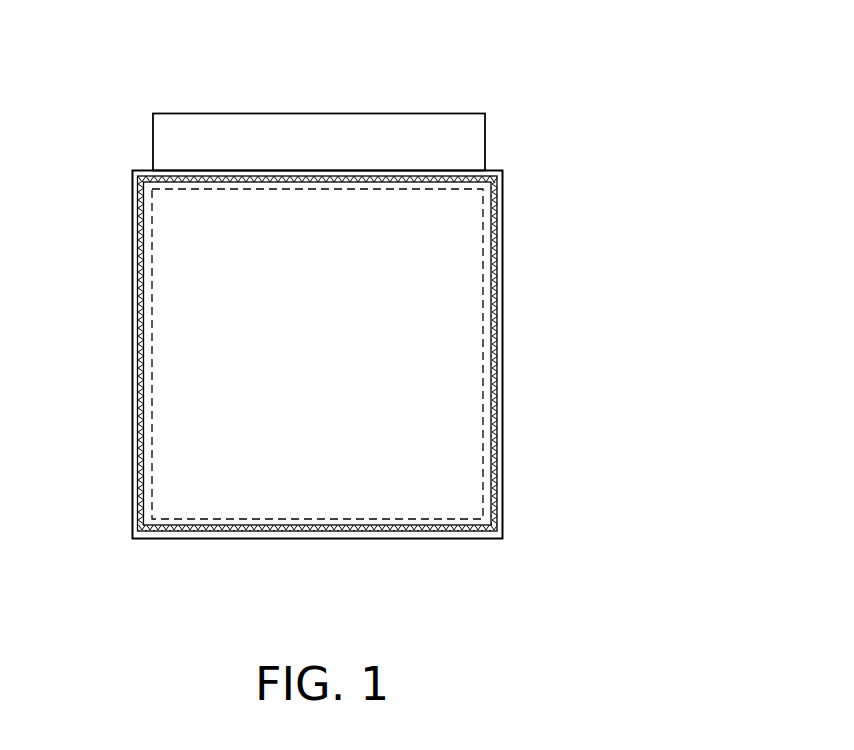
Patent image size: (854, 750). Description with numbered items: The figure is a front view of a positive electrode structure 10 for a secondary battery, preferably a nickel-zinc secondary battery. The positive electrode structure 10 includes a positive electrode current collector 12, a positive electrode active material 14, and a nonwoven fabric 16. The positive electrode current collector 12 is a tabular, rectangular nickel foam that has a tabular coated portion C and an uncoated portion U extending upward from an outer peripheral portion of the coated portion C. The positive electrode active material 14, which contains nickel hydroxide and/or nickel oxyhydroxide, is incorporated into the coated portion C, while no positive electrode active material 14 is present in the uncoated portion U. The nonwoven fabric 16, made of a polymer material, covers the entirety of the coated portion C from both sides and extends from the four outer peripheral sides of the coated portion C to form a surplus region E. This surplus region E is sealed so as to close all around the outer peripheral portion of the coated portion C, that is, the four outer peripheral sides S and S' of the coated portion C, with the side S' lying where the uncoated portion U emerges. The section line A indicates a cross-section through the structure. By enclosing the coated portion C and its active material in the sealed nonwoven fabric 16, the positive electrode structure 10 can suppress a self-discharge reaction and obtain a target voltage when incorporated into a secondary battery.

The positive electrode structure 10 is at (544, 84).
The positive electrode current collector 12 is at (468, 133).
The positive electrode active material 14 is at (460, 325).
The nonwoven fabric 16 is at (465, 452).
The surplus region E is at (178, 175).
The outer peripheral side S is at (314, 469).
The outer peripheral side S' is at (393, 126).
The section line A- A is at (217, 238).
The uncoated portion U is at (327, 158).
The coated portion C is at (325, 355).